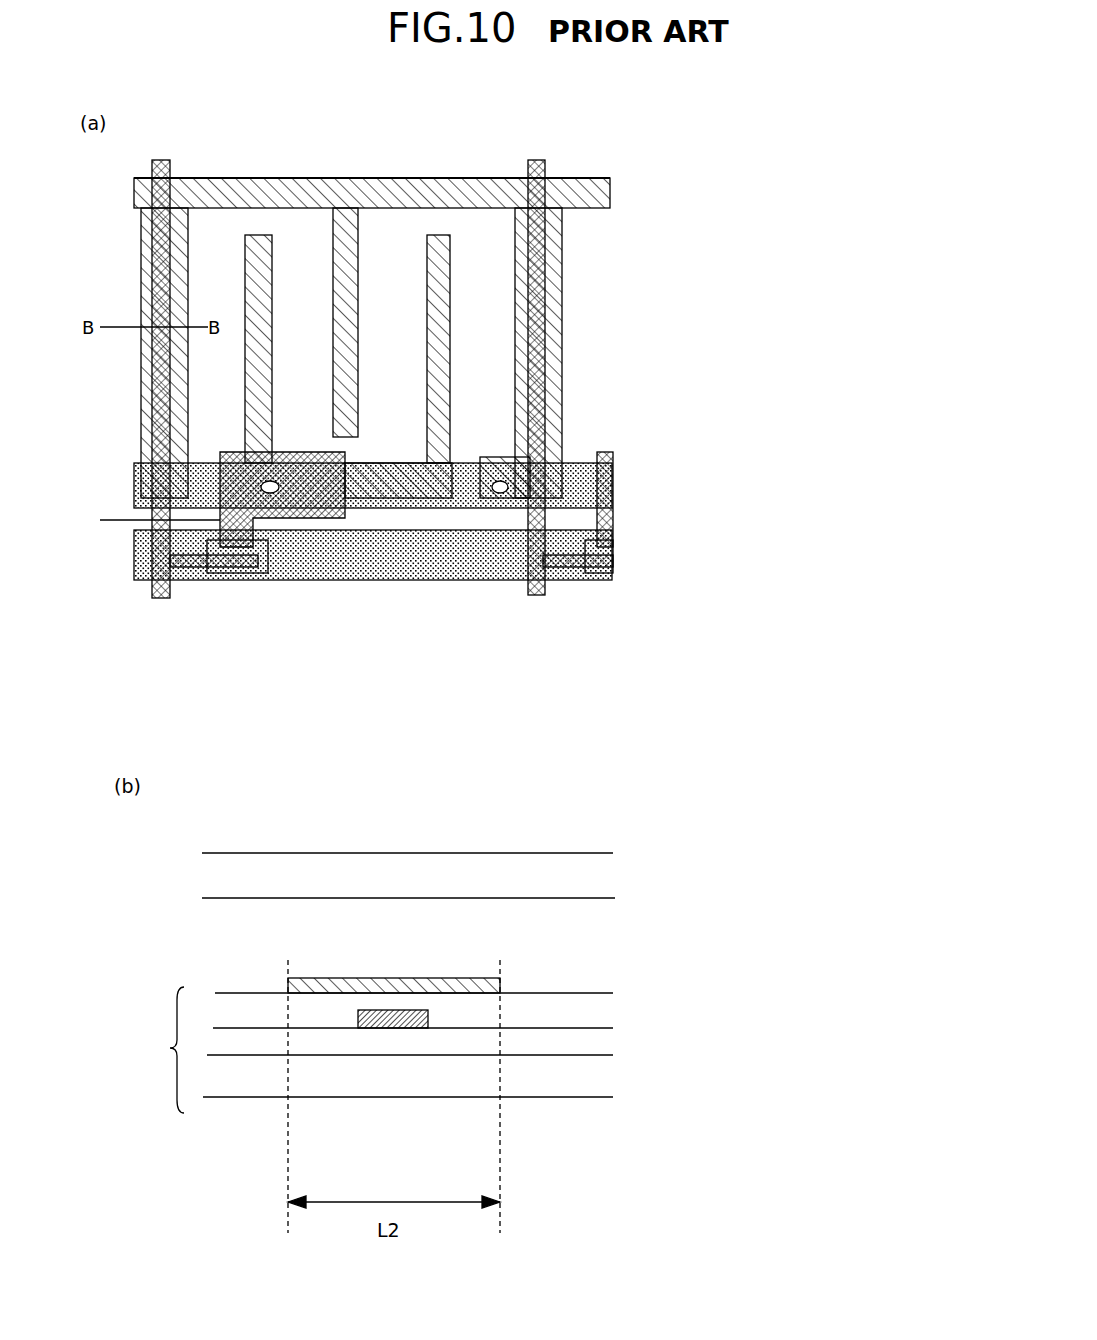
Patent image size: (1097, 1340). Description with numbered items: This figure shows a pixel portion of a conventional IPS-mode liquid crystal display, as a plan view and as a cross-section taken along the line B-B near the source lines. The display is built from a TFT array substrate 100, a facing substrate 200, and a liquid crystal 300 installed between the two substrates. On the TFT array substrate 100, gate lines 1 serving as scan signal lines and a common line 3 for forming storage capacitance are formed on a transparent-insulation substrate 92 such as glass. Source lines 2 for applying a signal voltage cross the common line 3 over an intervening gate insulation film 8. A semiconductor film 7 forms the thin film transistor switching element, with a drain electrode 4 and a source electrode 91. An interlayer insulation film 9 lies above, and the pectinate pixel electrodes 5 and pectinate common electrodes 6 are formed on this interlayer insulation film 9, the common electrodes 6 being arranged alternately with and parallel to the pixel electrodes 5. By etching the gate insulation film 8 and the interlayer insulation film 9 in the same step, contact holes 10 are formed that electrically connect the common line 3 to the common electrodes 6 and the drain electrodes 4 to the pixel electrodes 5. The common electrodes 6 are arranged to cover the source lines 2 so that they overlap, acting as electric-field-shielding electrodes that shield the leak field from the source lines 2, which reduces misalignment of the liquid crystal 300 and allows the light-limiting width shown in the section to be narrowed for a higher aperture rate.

The gate line 1 is at (373, 423).
The source line 2 is at (337, 790).
The common line 3 is at (616, 492).
The drain electrode 4 is at (141, 535).
The pectinate pixel electrode 5 is at (554, 349).
The pectinate common electrode 6 is at (471, 549).
The semiconductor film 7 is at (336, 453).
The gate insulation film 8 is at (507, 1041).
The interlayer insulation film 9 is at (511, 1000).
The contact hole 10 is at (400, 581).
The source electrode 91 is at (210, 422).
The transparent-insulation substrate 92 is at (507, 1090).
The TFT array substrate 100 is at (158, 1058).
The facing substrate 200 is at (486, 854).
The liquid crystal 300 is at (499, 916).